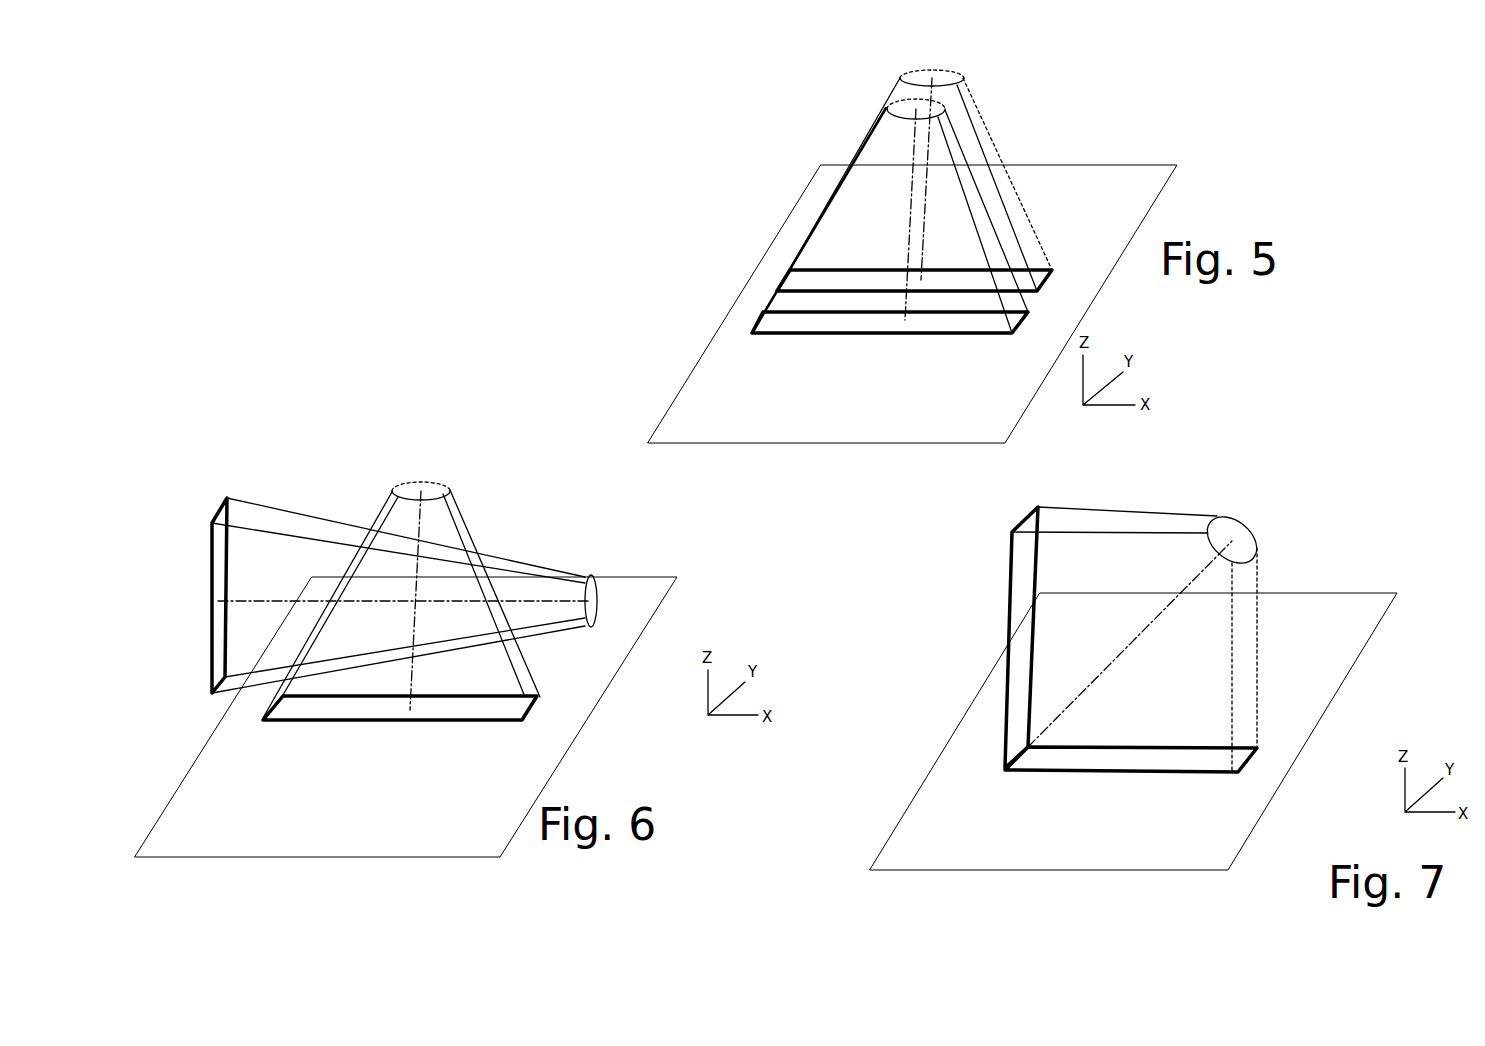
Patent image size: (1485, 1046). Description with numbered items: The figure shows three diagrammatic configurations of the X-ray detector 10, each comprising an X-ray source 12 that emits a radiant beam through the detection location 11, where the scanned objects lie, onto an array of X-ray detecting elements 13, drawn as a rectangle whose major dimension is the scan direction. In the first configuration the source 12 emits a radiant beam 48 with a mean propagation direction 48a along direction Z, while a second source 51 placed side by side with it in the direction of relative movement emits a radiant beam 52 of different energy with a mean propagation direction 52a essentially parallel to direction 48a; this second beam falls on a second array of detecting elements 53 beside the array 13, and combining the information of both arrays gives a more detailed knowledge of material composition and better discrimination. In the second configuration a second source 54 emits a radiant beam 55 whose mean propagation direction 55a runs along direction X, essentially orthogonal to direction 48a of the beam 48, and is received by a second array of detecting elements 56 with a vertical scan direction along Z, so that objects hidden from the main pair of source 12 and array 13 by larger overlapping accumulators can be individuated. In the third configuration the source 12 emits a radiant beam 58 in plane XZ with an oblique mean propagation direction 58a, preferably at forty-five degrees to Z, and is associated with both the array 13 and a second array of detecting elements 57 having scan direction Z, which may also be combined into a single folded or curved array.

In FIG. 5, the X-ray detector 10 is at (890, 76).
In FIG. 6, the X-ray detector 10 is at (500, 455).
In FIG. 7, the X-ray detector 10 is at (1270, 485).
In FIG. 5, the detection location 11 is at (712, 387).
In FIG. 6, the detection location 11 is at (203, 798).
In FIG. 7, the detection location 11 is at (930, 813).
In FIG. 5, the X-ray source 12 is at (952, 78).
In FIG. 6, the X-ray source 12 is at (435, 490).
In FIG. 7, the X-ray source 12 is at (1248, 540).
In FIG. 5, the array of X-ray detecting elements 13 is at (1052, 272).
In FIG. 6, the array of X-ray detecting elements 13 is at (510, 708).
In FIG. 7, the array of X-ray detecting elements 13 is at (1118, 768).
In FIG. 5, the radiant beam 48 is at (992, 147).
In FIG. 6, the radiant beam 48 is at (468, 542).
In FIG. 5, the mean propagation direction 48a is at (930, 90).
In FIG. 6, the mean propagation direction 48a is at (420, 522).
In FIG. 5, the second source 51 is at (900, 107).
In FIG. 5, the radiant beam 52 is at (977, 217).
In FIG. 5, the mean propagation direction 52a is at (910, 190).
In FIG. 5, the second array of detecting elements 53 is at (797, 323).
In FIG. 6, the second source 54 is at (592, 593).
In FIG. 6, the radiant beam 55 is at (317, 527).
In FIG. 6, the mean propagation direction 55a is at (247, 600).
In FIG. 6, the second array of detecting elements 56 is at (217, 535).
In FIG. 7, the second array of detecting elements 57 is at (1010, 603).
In FIG. 7, the radiant beam 58 is at (1178, 550).
In FIG. 7, the mean propagation direction 58a is at (1163, 615).